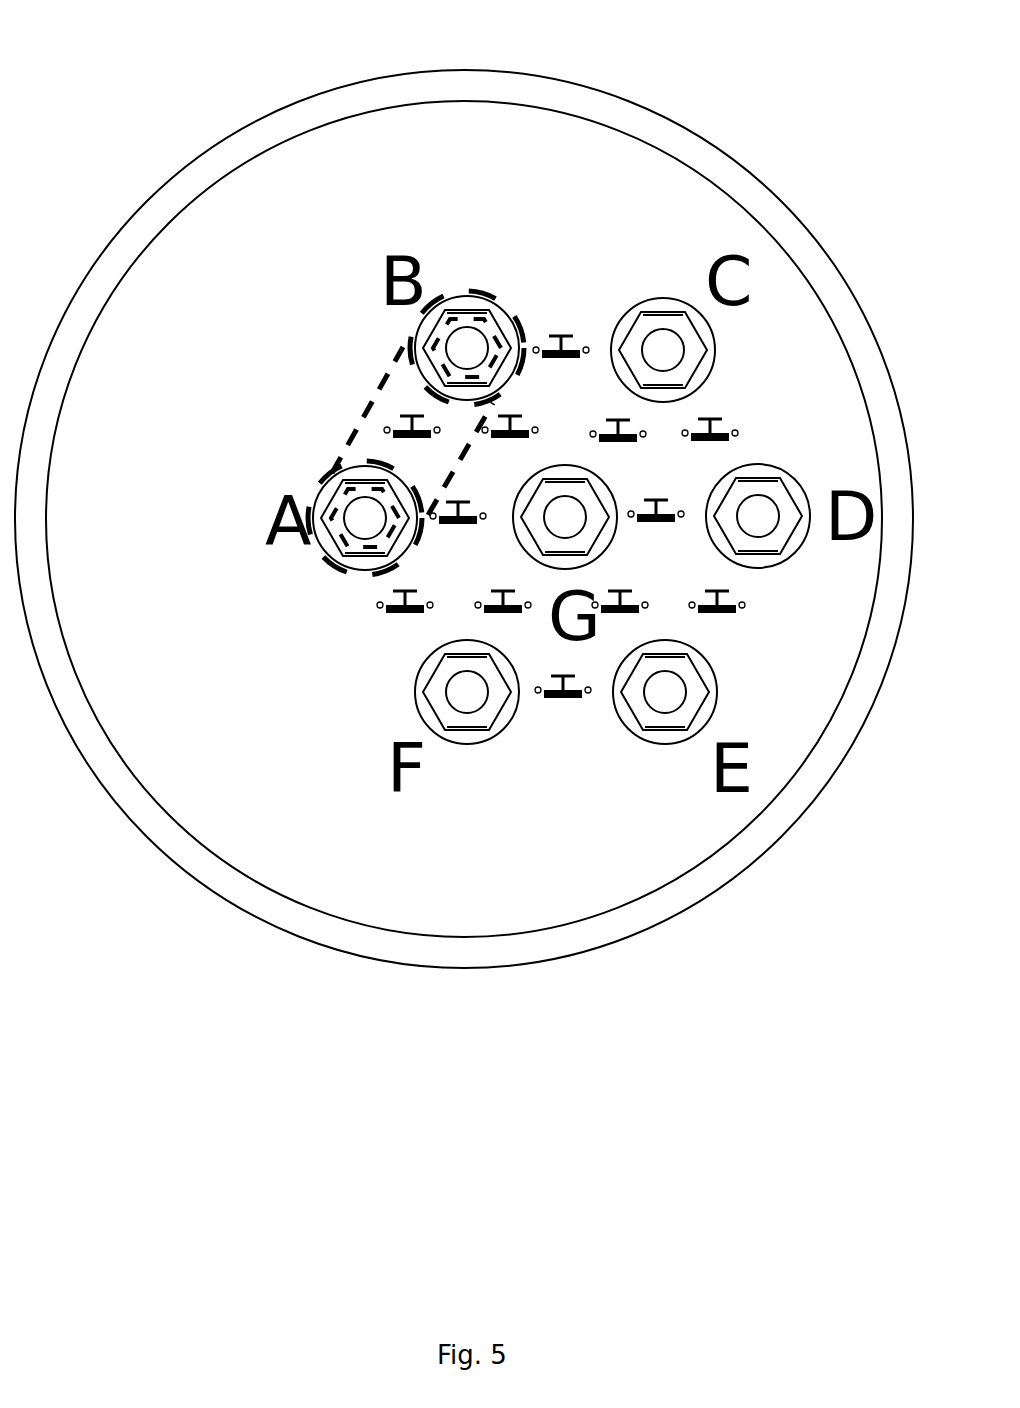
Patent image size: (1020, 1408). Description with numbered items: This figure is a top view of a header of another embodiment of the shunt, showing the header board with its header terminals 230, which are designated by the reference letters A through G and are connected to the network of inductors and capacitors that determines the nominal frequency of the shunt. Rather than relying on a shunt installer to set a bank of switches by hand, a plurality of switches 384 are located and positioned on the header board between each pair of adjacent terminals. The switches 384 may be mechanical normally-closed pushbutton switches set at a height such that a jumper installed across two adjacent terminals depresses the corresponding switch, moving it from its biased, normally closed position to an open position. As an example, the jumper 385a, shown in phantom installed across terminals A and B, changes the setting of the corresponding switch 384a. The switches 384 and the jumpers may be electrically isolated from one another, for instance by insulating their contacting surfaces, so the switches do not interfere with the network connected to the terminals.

The header terminals 230 is at (630, 154).
The switches 384 is at (682, 513).
The switch 384a is at (388, 428).
The jumper 385a is at (360, 454).